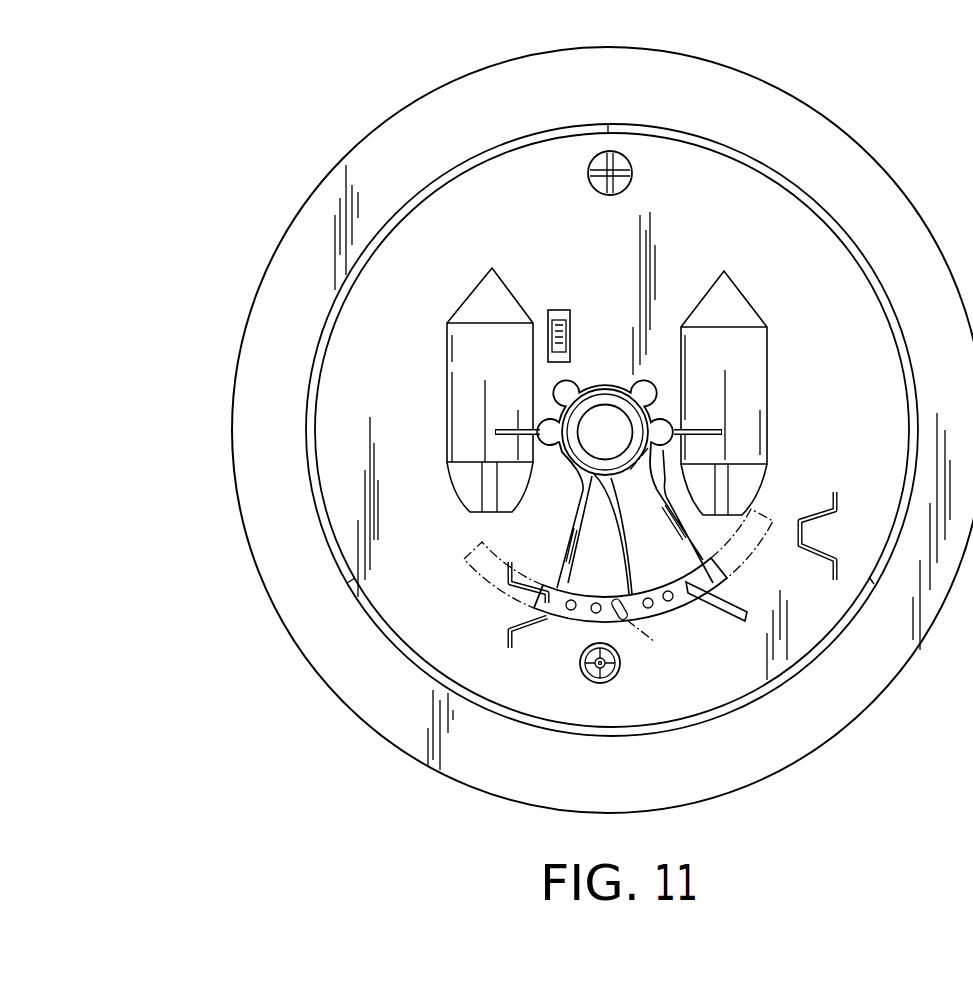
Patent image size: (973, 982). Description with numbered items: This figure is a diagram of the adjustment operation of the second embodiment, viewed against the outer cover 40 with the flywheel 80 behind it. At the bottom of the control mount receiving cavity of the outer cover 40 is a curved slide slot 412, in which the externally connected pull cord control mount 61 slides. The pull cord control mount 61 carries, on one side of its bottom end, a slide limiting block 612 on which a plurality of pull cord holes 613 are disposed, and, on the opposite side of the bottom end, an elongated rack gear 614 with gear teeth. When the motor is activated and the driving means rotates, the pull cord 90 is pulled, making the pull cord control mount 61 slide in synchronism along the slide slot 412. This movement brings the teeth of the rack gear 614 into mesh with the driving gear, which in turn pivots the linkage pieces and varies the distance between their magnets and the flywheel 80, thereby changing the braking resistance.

The flywheel 80 is at (832, 127).
The outer cover 40 is at (348, 392).
The pull cord control mount 61 is at (617, 388).
The slide limiting block 612 is at (661, 645).
The pull cord holes 613 is at (686, 600).
The rack gear 614 is at (757, 528).
The curved slide slot 412 is at (712, 573).
The pull cord 90 is at (714, 622).